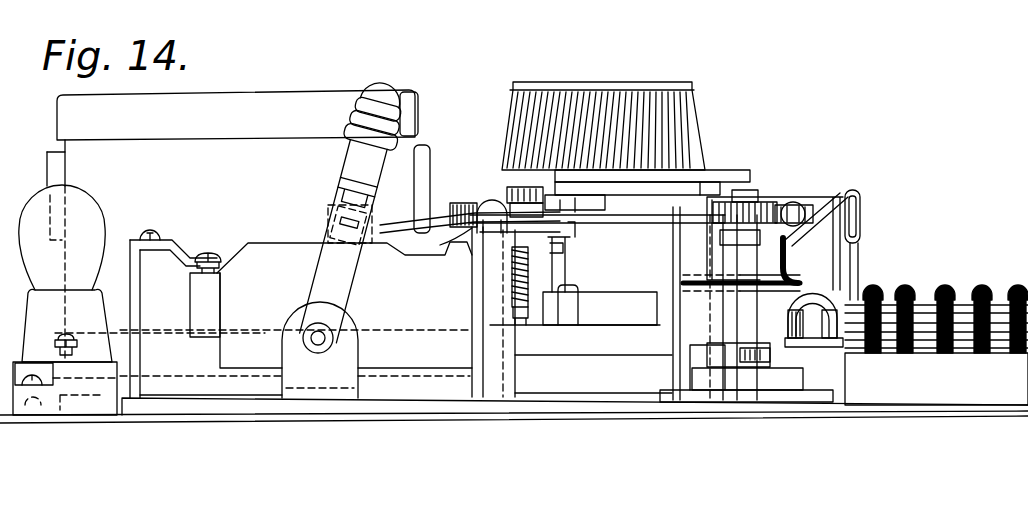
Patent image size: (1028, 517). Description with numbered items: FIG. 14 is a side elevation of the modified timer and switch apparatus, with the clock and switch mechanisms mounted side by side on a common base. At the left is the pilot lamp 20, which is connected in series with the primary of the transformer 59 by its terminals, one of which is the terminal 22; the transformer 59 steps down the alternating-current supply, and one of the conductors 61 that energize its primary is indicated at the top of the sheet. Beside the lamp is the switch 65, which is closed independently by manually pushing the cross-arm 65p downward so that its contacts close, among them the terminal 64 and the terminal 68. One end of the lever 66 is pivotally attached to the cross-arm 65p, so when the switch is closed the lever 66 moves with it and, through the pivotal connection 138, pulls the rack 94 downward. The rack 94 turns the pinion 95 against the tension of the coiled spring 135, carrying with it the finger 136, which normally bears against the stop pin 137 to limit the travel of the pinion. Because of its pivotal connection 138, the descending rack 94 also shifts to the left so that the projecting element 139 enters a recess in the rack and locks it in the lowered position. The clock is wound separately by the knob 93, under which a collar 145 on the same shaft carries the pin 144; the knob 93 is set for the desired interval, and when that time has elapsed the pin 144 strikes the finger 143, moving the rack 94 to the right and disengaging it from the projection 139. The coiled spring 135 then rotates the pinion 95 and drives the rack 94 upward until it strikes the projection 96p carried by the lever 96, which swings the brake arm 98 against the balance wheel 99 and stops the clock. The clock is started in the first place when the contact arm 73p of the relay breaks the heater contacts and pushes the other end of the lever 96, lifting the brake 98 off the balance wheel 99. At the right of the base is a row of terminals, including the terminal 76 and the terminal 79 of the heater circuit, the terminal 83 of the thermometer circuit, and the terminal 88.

The transformer 59 is at (238, 161).
The pilot lamp 20 is at (90, 205).
The terminal 22 is at (60, 338).
The switch 65 is at (296, 314).
The cross-arm 65p is at (328, 196).
The terminal 68 is at (222, 263).
The terminal 64 is at (392, 255).
The lever 66 is at (437, 208).
The pivotal connection 138 is at (462, 203).
The knob 93 is at (693, 115).
The collar 145 is at (660, 182).
The pin 144 is at (572, 180).
The rack 94 is at (648, 220).
The projecting element 139 is at (565, 233).
The finger 143 is at (575, 213).
The spring seat 73p is at (522, 325).
The pinion 95 is at (787, 203).
The lever 96 is at (793, 203).
The projection 96p is at (845, 194).
The brake arm 98 is at (792, 259).
The balance wheel 99 is at (800, 282).
The stop pin 137 is at (700, 370).
The finger 136 is at (780, 358).
The coiled spring 135 is at (835, 385).
The terminal 76 is at (868, 295).
The terminal 79 is at (904, 295).
The terminal 83 is at (980, 295).
The terminal 88 is at (1012, 295).
The conductor 61 is at (438, 0).